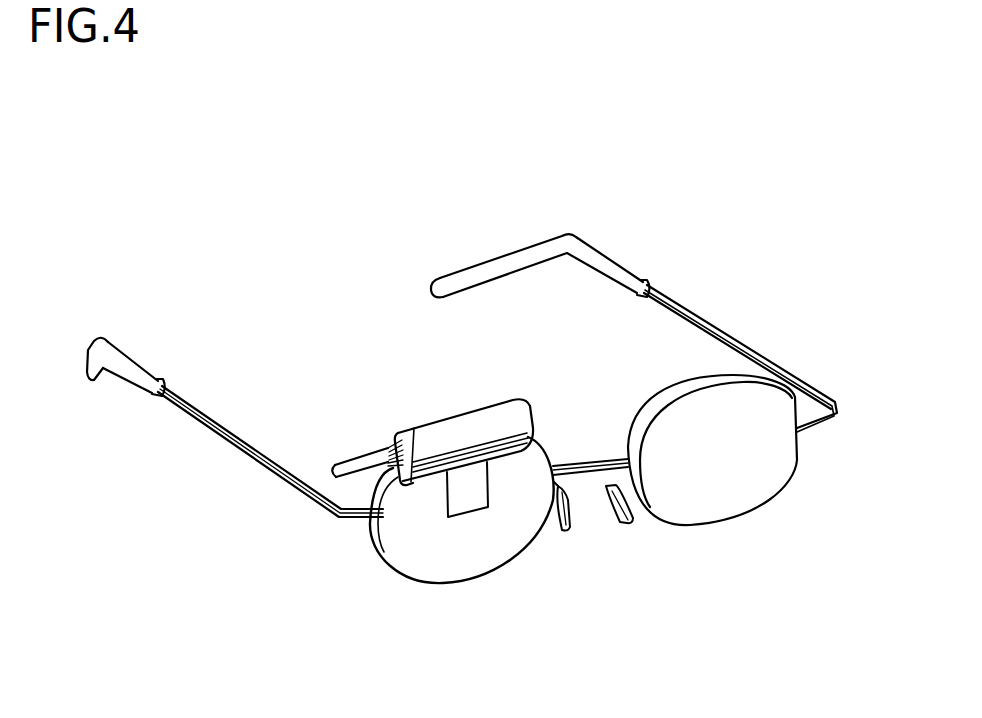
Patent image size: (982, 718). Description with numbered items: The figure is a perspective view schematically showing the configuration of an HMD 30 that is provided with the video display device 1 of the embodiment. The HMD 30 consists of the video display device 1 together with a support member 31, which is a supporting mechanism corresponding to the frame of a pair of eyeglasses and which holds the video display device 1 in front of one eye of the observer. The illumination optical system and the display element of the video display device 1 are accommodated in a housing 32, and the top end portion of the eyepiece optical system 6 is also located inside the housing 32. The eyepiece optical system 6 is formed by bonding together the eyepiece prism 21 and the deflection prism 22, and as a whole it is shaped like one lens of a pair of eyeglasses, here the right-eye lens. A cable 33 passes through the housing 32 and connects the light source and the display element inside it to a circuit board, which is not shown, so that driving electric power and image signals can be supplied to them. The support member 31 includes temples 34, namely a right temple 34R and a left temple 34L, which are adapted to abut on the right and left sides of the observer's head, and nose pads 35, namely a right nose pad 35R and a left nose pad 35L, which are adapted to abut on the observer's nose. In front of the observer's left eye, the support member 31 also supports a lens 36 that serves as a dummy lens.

The video display device 1 is at (374, 384).
The eyepiece optical system 6 is at (494, 582).
The eyepiece prism 21 is at (457, 495).
The deflection prism 22 is at (450, 558).
The HMD 30 is at (716, 188).
The support member 31 is at (178, 518).
The housing 32 is at (473, 424).
The cable 33 is at (362, 463).
The temples 34 is at (465, 423).
The right temple 34R is at (237, 450).
The left temple 34L is at (732, 337).
The nose pads 35 is at (604, 558).
The right nose pad 35R is at (562, 527).
The left nose pad 35L is at (627, 525).
The lens 36 is at (728, 488).